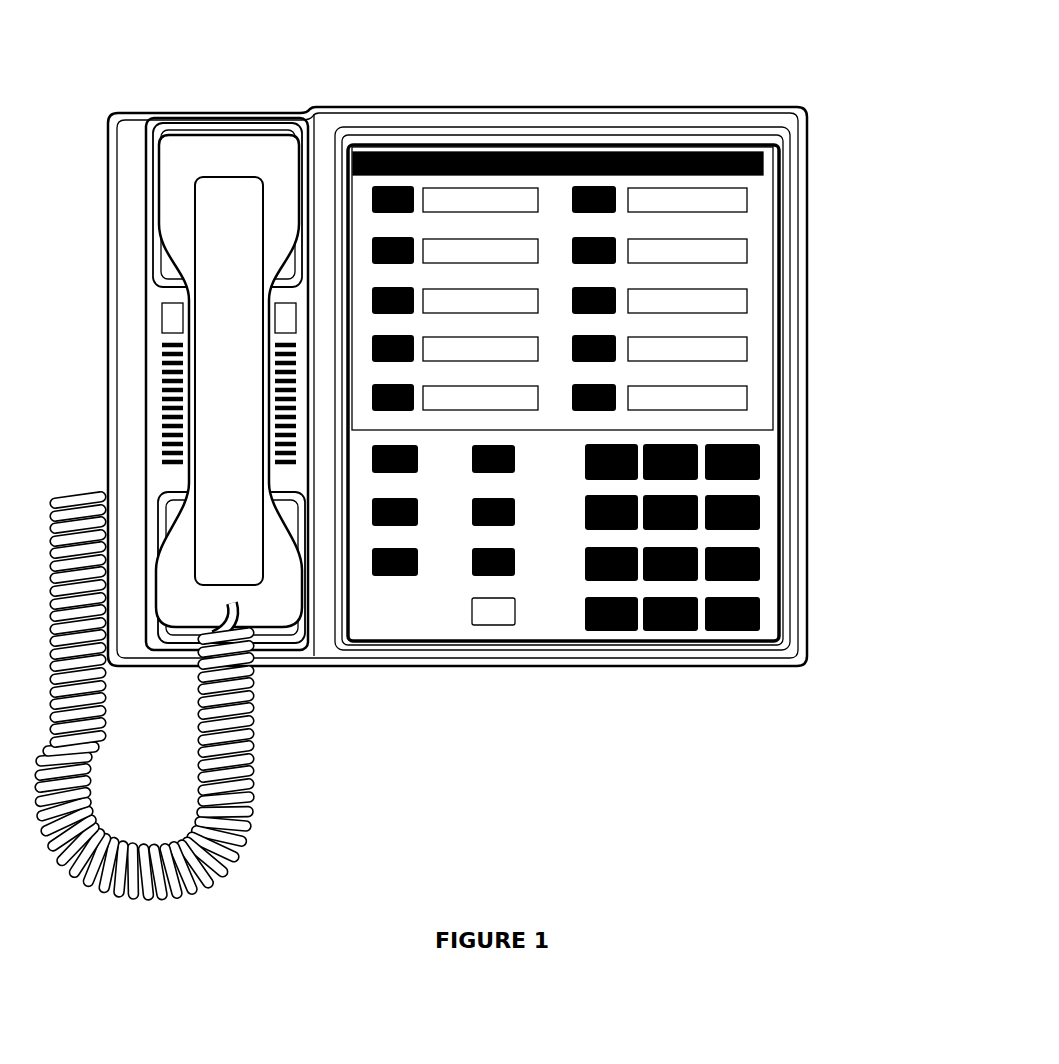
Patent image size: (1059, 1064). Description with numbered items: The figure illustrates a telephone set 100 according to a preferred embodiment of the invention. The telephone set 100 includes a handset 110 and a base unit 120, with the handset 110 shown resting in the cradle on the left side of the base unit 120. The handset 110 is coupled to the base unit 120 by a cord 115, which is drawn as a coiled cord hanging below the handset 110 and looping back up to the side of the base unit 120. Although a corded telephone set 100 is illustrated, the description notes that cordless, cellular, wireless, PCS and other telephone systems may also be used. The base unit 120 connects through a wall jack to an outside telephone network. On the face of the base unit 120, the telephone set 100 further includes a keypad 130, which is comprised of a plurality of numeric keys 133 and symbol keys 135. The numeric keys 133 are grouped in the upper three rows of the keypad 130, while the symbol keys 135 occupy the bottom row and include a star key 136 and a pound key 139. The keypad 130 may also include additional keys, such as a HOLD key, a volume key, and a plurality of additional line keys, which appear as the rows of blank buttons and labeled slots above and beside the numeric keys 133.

The telephone set 100 is at (479, 460).
The handset 110 is at (218, 119).
The cord 115 is at (248, 748).
The base unit 120 is at (817, 160).
The keypad 130 is at (719, 577).
The numeric keys 133 is at (583, 570).
The symbol keys 135 is at (665, 654).
The star key 136 is at (615, 633).
The pound key 139 is at (755, 647).